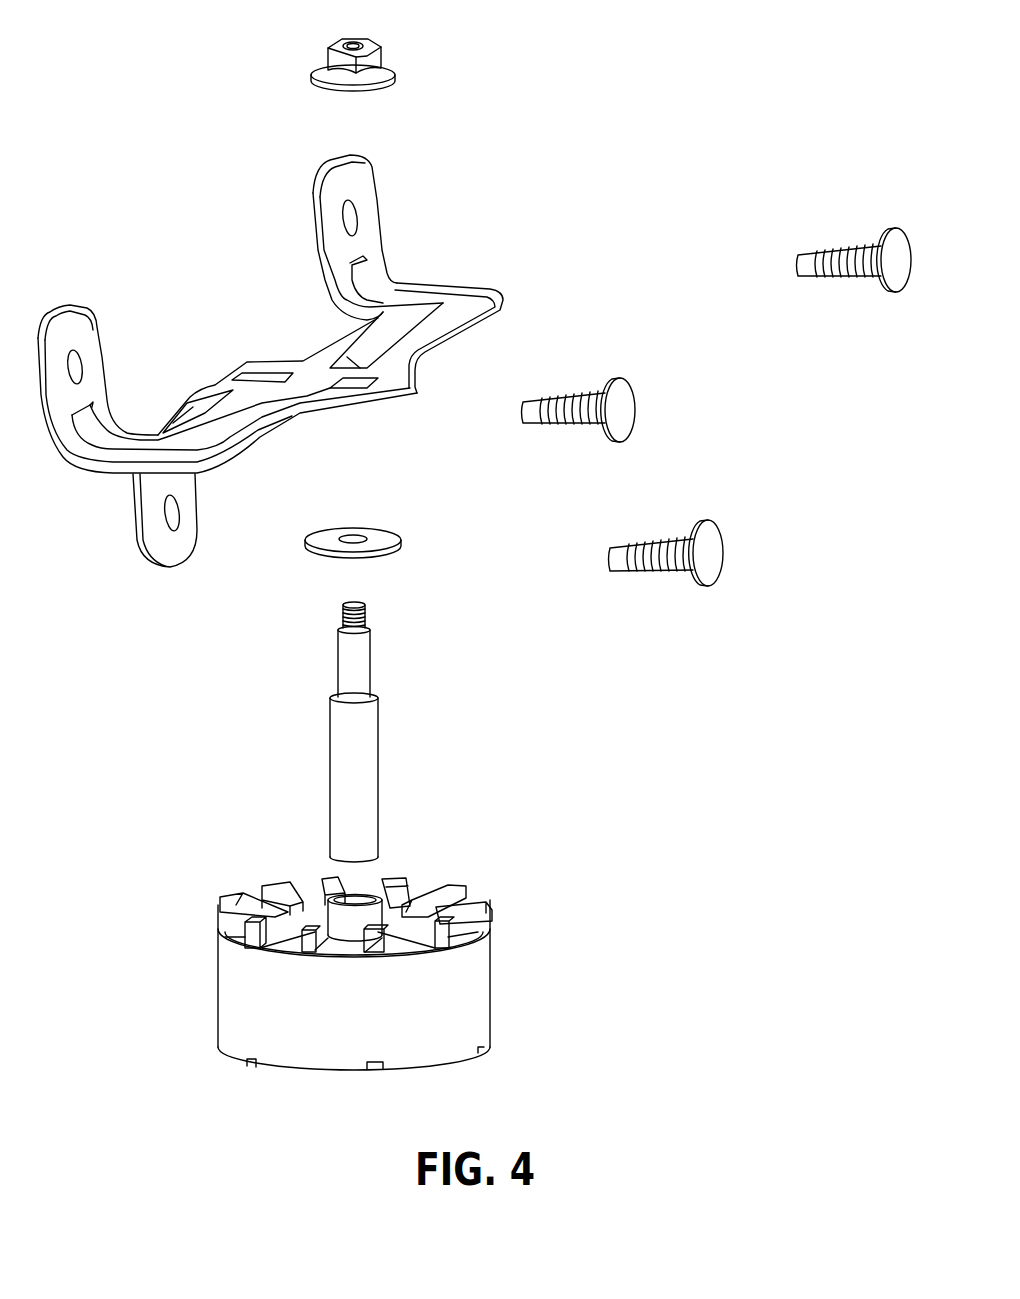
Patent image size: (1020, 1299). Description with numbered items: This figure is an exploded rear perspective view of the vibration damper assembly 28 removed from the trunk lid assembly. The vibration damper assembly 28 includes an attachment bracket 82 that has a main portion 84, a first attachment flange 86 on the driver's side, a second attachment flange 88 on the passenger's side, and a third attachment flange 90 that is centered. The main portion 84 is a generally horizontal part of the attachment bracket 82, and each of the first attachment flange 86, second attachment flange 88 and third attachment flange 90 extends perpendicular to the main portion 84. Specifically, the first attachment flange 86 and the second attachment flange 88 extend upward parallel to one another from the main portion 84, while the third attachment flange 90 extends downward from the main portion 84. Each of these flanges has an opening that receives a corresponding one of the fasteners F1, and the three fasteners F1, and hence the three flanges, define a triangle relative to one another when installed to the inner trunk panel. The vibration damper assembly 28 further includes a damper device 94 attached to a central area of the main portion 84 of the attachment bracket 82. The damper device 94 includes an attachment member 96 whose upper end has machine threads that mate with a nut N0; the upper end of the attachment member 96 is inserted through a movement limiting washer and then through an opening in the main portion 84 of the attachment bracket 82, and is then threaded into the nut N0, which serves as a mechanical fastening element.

The vibration damper assembly 28 is at (600, 64).
The nut N0 is at (330, 43).
The attachment bracket 82 is at (275, 356).
The main portion 84 is at (322, 392).
The first attachment flange 86 is at (77, 330).
The second attachment flange 88 is at (355, 185).
The third attachment flange 90 is at (177, 543).
The attachment member 96 is at (380, 767).
The damper device 94 is at (492, 968).
The fasteners F1 is at (842, 279).